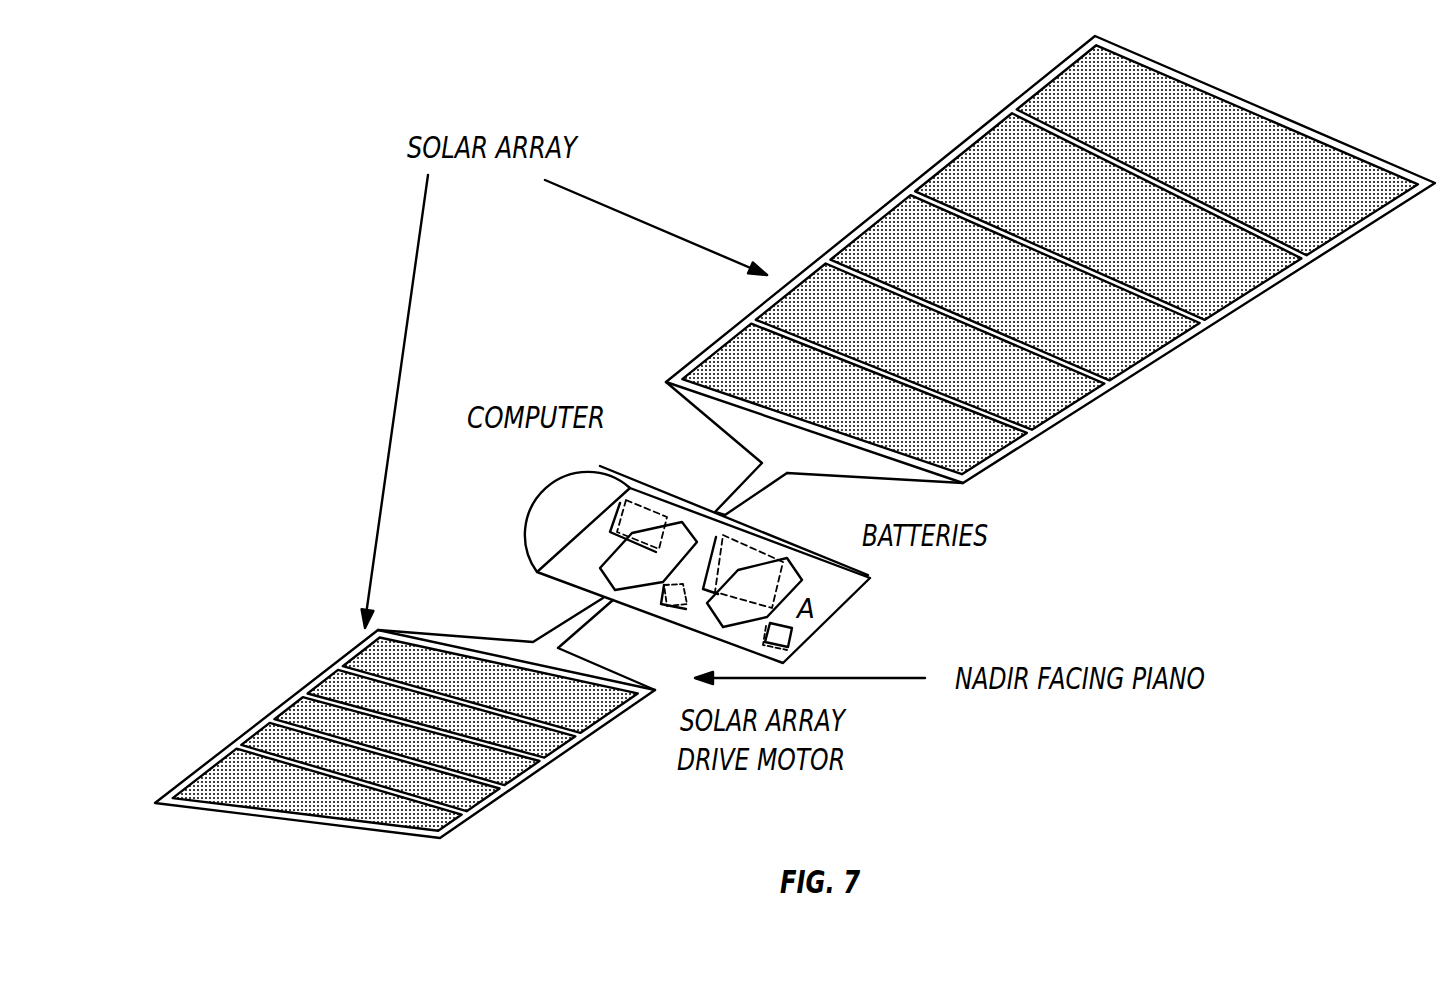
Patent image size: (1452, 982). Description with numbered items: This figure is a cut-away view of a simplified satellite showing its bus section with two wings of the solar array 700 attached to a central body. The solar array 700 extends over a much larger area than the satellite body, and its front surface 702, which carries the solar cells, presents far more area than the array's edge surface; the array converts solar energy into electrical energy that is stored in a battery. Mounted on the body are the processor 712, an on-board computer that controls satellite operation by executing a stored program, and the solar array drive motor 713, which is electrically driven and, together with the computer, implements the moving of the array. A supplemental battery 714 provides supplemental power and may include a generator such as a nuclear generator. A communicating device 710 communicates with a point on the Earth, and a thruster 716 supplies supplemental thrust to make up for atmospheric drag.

The solar array 700 is at (953, 148).
The front surface of the solar array 702 is at (1143, 95).
The communicating device 710 is at (792, 630).
The processor 712 is at (632, 500).
The solar array drive motor 713 is at (675, 607).
The supplemental battery 714 is at (755, 545).
The thruster 716 is at (812, 613).